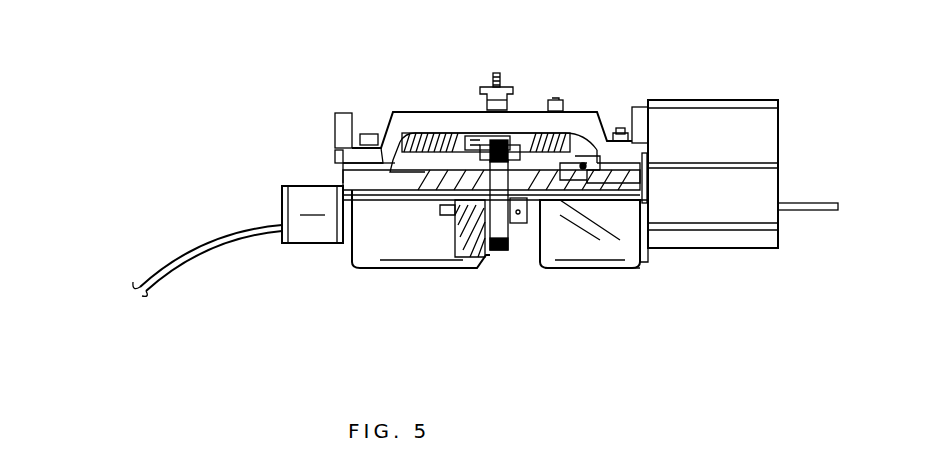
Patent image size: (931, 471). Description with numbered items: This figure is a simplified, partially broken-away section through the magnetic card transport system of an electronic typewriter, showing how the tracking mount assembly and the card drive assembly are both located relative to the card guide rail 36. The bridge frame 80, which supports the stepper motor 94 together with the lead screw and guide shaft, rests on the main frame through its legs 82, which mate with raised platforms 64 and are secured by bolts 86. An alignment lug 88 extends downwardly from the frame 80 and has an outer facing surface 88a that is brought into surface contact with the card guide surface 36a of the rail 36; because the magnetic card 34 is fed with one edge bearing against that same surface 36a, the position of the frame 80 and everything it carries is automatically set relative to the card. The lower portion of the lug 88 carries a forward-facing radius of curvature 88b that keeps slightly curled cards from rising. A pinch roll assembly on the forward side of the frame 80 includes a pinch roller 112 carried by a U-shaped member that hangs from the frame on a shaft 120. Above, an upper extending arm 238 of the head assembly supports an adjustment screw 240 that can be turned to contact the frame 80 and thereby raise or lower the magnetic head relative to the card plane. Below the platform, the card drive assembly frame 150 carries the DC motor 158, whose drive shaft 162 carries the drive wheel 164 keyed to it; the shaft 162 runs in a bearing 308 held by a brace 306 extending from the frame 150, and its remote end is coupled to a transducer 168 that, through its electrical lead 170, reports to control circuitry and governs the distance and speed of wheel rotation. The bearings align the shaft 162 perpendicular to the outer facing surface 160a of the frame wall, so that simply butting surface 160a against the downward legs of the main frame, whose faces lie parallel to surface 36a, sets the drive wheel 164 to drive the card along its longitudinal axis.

The magnetic card 34 is at (424, 172).
The card guide rail 36 is at (590, 167).
The card guide surface 36a is at (578, 203).
The raised platforms 64 is at (647, 200).
The bridge frame 80 is at (588, 115).
The legs 82 is at (355, 165).
The bolts 86 is at (368, 133).
The alignment lug 88 is at (583, 163).
The outer facing surface 88a is at (586, 163).
The radius of curvature 88b is at (560, 200).
The stepper motor 94 is at (760, 133).
The pinch roller 112 is at (506, 142).
The shaft 120 is at (493, 133).
The frame 150 is at (633, 258).
The DC motor 158 is at (763, 215).
The outer facing surface 160a is at (652, 212).
The drive shaft 162 is at (572, 225).
The drive wheel 164 is at (499, 252).
The transducer 168 is at (303, 220).
The electrical lead 170 is at (202, 250).
The upper extending arm 238 is at (515, 93).
The adjustment screw 240 is at (495, 72).
The brace 306 is at (482, 258).
The bearing 308 is at (463, 263).